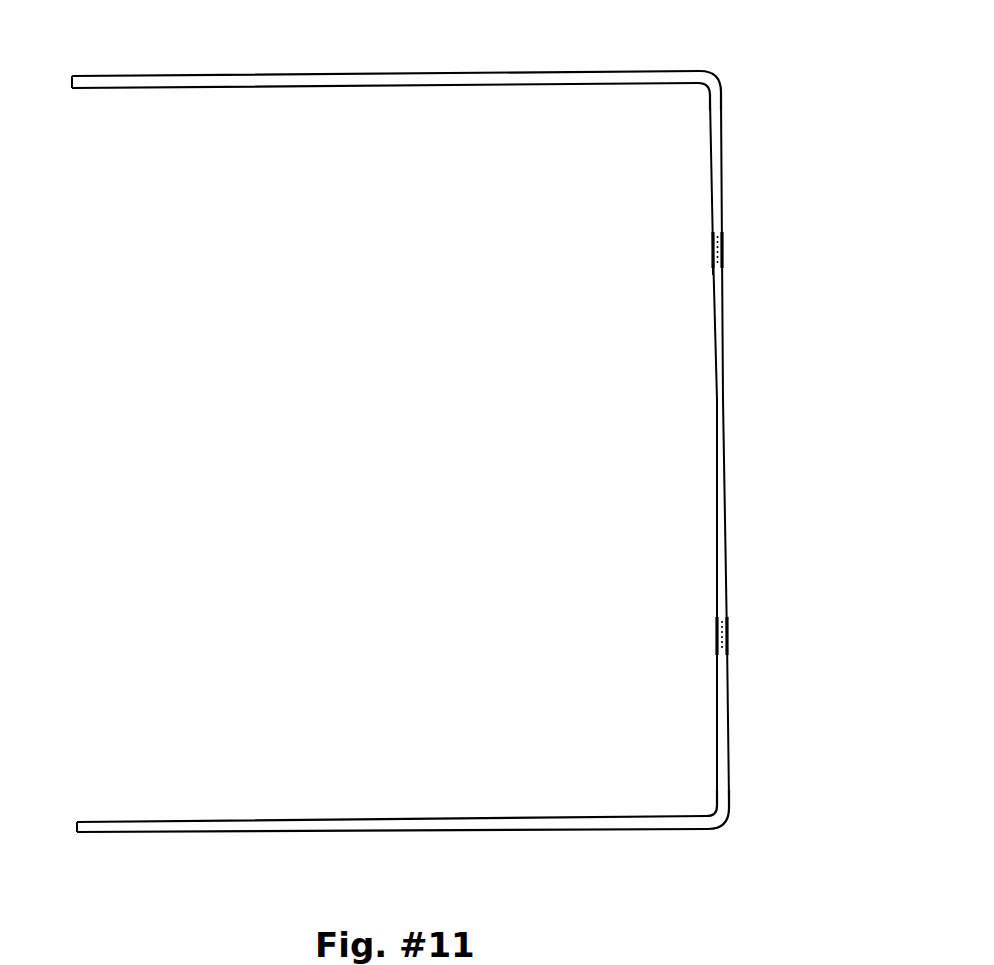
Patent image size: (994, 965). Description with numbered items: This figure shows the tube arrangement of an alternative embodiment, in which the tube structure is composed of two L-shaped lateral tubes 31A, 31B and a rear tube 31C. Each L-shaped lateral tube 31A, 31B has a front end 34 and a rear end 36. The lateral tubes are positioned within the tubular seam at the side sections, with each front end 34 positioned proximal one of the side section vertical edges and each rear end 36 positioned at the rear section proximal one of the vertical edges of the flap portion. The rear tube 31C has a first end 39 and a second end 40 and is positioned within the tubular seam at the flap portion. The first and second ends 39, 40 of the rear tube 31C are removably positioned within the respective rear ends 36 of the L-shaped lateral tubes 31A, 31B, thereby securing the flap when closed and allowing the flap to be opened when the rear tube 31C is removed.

The L-shaped lateral tube 31A is at (520, 822).
The L-shaped lateral tube 31B is at (468, 75).
The rear tube 31C is at (722, 415).
The front end 34 is at (74, 76).
The rear end 36 is at (715, 266).
The first end 39 is at (724, 650).
The second end 40 is at (718, 232).